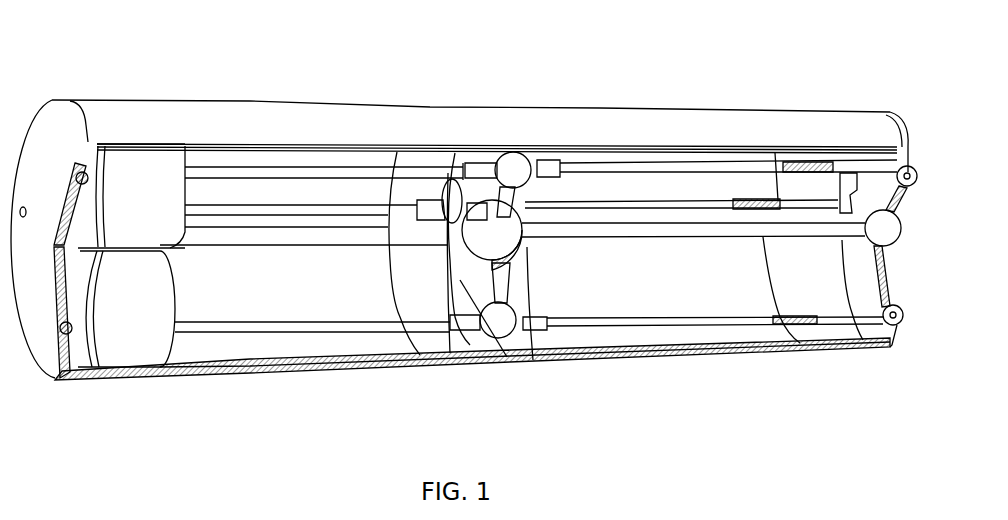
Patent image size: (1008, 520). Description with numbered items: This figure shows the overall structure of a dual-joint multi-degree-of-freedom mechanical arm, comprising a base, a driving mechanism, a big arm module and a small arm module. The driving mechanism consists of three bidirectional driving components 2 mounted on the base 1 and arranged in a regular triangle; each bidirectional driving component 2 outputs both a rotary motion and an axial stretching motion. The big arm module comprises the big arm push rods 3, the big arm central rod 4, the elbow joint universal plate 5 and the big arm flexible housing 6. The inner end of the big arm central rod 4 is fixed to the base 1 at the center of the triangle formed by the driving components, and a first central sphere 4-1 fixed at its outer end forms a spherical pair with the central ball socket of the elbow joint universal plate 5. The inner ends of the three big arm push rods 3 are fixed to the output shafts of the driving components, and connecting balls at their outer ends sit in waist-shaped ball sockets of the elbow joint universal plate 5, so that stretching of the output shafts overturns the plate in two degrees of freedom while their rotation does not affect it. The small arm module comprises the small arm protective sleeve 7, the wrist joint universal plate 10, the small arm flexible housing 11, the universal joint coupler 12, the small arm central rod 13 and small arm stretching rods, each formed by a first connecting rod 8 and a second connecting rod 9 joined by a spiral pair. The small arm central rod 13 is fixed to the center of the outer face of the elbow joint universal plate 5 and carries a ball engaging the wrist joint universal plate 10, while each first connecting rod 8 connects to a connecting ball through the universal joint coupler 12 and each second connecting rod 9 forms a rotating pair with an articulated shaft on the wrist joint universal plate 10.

The base 1 is at (103, 130).
The bidirectional driving component 2 is at (167, 173).
The big arm push rod 3 is at (222, 177).
The big arm central rod 4 is at (295, 236).
The first central sphere 4-1 is at (490, 243).
The elbow joint universal plate 5 is at (498, 153).
The big arm flexible housing 6 is at (460, 138).
The small arm protective sleeve 7 is at (578, 140).
The first connecting rod 8 is at (625, 167).
The second connecting rod 9 is at (840, 173).
The wrist joint universal plate 10 is at (900, 130).
The small arm flexible housing 11 is at (862, 130).
The universal joint coupler 12 is at (540, 203).
The small arm central rod 13 is at (763, 232).